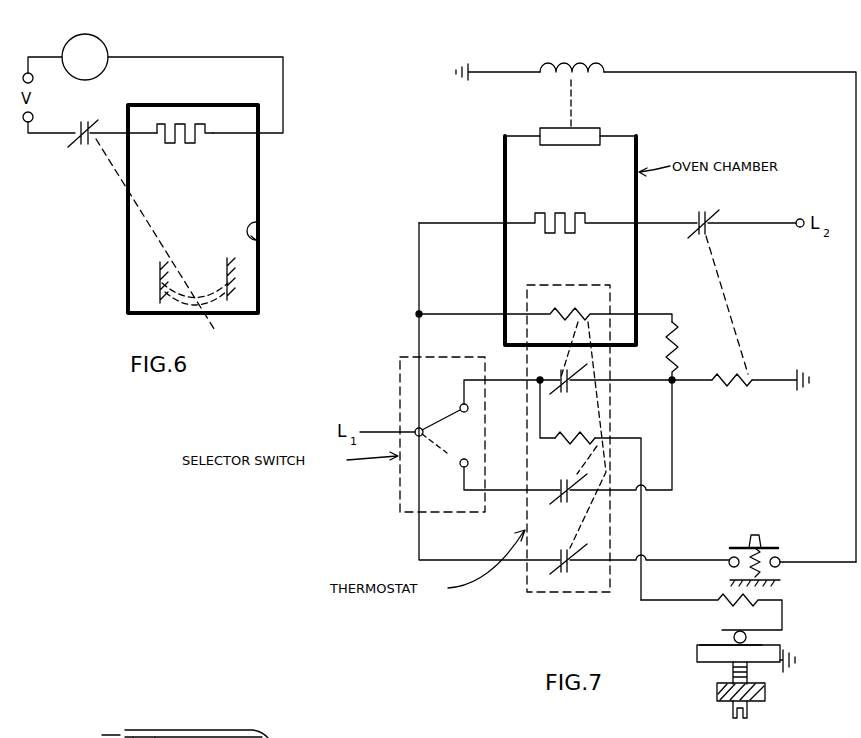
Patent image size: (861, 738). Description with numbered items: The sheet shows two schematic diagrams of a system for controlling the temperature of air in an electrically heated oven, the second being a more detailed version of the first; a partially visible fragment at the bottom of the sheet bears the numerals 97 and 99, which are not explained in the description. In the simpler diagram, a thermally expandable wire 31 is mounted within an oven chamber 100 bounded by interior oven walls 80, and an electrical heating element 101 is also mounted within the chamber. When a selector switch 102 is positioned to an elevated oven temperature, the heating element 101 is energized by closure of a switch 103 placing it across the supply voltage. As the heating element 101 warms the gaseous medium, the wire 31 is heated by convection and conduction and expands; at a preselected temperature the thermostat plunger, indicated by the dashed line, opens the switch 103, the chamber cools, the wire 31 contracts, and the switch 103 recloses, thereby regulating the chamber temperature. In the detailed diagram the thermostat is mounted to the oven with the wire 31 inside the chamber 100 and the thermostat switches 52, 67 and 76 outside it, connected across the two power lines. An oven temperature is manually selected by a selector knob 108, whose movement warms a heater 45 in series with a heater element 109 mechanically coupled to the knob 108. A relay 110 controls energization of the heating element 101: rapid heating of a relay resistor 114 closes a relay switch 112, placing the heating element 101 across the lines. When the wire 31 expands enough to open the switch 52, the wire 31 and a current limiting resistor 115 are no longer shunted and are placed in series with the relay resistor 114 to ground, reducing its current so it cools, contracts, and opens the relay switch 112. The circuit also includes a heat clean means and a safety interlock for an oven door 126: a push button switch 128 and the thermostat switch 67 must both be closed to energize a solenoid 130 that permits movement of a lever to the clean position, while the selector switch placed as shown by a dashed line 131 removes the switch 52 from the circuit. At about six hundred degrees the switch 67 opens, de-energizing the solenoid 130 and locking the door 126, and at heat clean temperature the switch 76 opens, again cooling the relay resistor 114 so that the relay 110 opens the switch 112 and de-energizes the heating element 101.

In FIG. 6, the thermally expandable wire 31 is at (197, 301).
In FIG. 7, the thermally expandable wire 31 is at (566, 310).
In FIG. 7, the heater 45 is at (575, 452).
In FIG. 7, the thermostat switch 52 is at (564, 393).
In FIG. 7, the thermostat switch 67 is at (566, 577).
In FIG. 7, the thermostat switch 76 is at (564, 503).
In FIG. 6, the interior oven walls 80 is at (256, 232).
In FIG. 6, the rack 97 is at (220, 730).
In FIG. 6, the support 99 is at (100, 732).
In FIG. 6, the oven chamber 100 is at (243, 180).
In FIG. 6, the heating element 101 is at (202, 123).
In FIG. 7, the heating element 101 is at (561, 210).
In FIG. 6, the selector switch 102 is at (106, 48).
In FIG. 6, the switch 103 is at (83, 122).
In FIG. 7, the selector knob 108 is at (765, 693).
In FIG. 7, the heater element 109 is at (720, 604).
In FIG. 7, the relay 110 is at (728, 296).
In FIG. 7, the relay switch 112 is at (701, 213).
In FIG. 7, the relay resistor 114 is at (735, 388).
In FIG. 7, the current limiting resistor 115 is at (679, 352).
In FIG. 7, the oven door 126 is at (556, 128).
In FIG. 7, the push button switch 128 is at (768, 545).
In FIG. 7, the solenoid 130 is at (578, 61).
In FIG. 7, the dashed line 131 is at (447, 456).